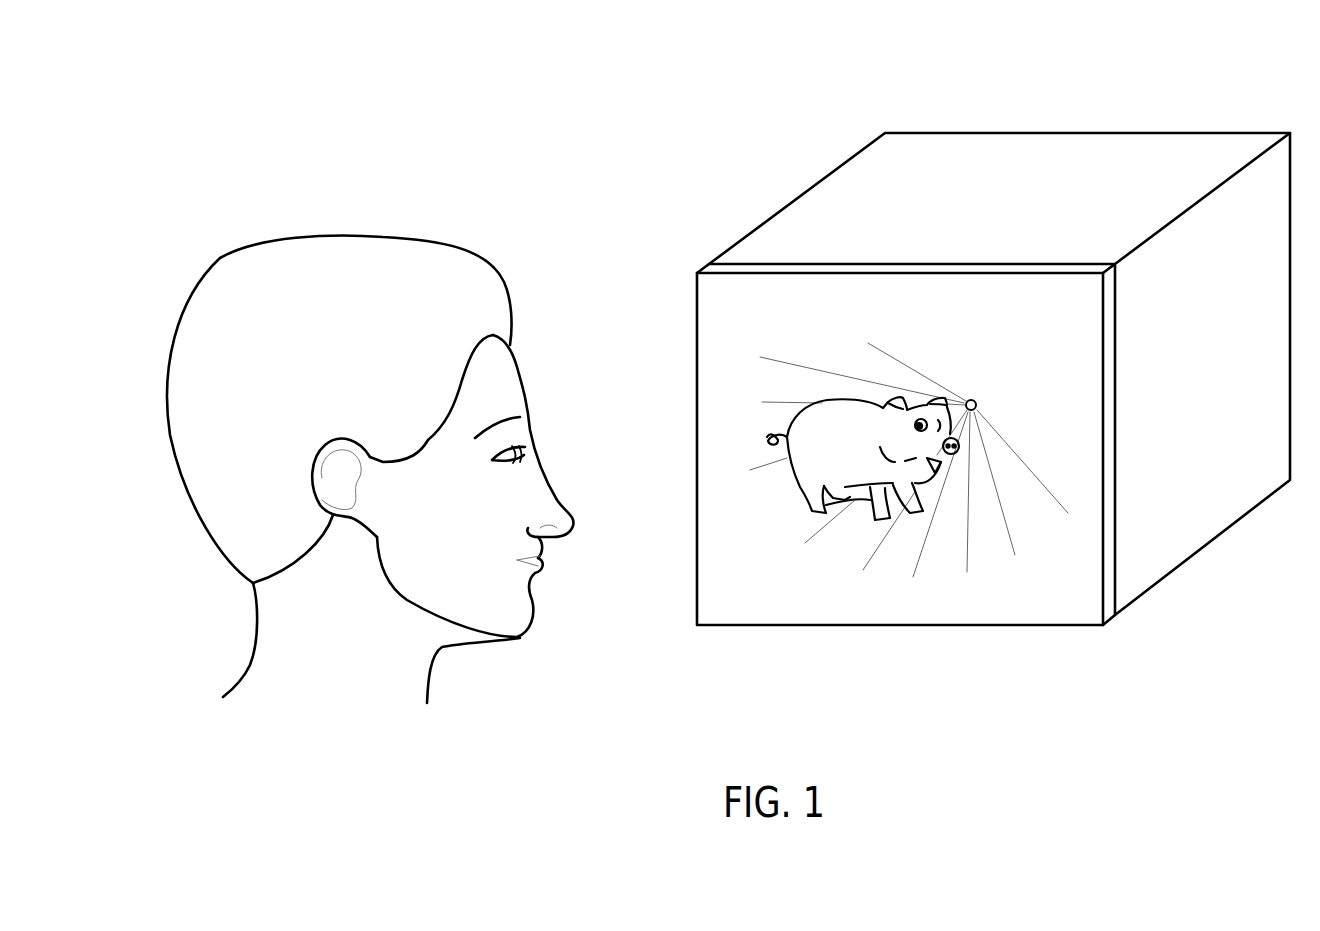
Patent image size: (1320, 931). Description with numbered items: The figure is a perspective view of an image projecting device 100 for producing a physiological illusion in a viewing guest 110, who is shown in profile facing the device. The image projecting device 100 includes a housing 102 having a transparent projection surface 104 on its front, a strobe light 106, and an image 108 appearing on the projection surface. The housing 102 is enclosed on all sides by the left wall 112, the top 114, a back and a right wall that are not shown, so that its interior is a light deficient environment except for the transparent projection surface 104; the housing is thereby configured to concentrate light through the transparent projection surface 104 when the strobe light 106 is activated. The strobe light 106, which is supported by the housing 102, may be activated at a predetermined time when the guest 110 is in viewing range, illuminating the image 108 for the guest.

The image projecting device 100 is at (732, 149).
The housing 102 is at (1228, 133).
The transparent projection surface 104 is at (873, 610).
The strobe light 106 is at (977, 397).
The image 108 is at (838, 410).
The guest 110 is at (292, 260).
The left wall 112 is at (1210, 520).
The top 114 is at (1010, 150).